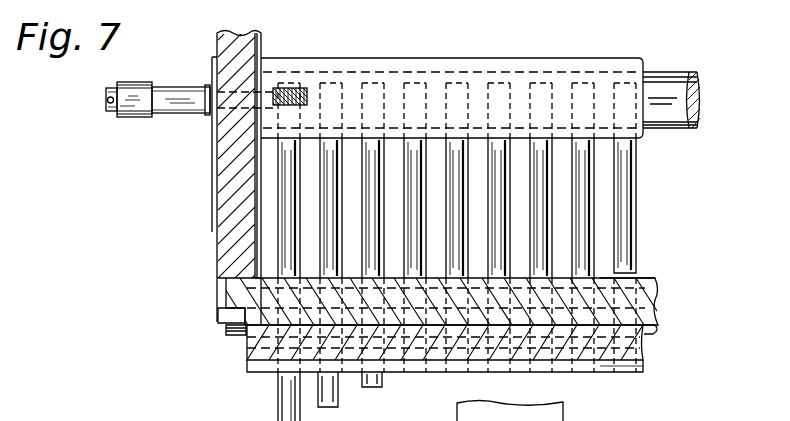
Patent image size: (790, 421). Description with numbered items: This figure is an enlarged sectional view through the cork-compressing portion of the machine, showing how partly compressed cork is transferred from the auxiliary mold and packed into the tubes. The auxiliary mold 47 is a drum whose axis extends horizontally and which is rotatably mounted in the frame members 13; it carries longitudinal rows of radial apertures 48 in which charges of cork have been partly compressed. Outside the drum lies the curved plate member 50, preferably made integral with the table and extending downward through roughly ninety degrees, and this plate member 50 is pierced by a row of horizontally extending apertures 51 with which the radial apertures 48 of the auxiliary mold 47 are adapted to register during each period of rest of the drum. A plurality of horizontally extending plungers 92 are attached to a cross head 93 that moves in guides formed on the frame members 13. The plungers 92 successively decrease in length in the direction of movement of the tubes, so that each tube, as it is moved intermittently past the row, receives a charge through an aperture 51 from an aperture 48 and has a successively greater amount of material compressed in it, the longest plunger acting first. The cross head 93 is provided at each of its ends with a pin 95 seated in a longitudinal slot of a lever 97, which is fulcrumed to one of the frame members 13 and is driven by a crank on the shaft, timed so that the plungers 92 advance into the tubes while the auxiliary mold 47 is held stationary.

The frame member 13 is at (214, 229).
The auxiliary mold 47 is at (656, 303).
The radial apertures 48 is at (648, 280).
The curved plate member 50 is at (645, 353).
The horizontally extending apertures 51 is at (610, 364).
The plungers 92 is at (585, 231).
The cross head 93 is at (603, 60).
The pin 95 is at (183, 110).
The lever 97 is at (141, 119).